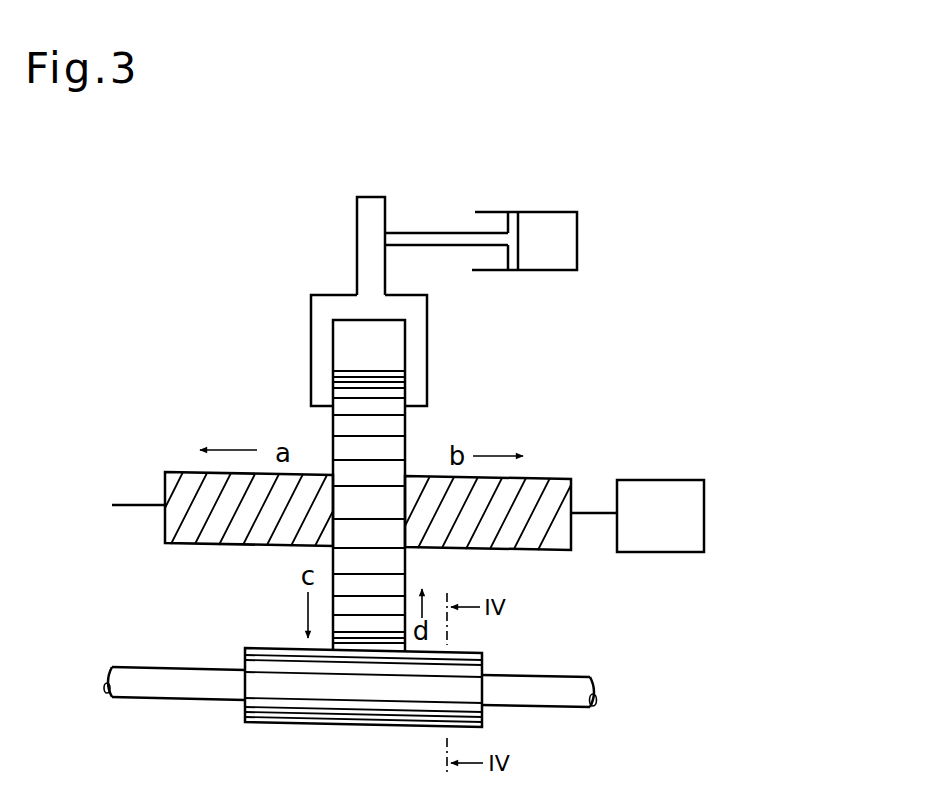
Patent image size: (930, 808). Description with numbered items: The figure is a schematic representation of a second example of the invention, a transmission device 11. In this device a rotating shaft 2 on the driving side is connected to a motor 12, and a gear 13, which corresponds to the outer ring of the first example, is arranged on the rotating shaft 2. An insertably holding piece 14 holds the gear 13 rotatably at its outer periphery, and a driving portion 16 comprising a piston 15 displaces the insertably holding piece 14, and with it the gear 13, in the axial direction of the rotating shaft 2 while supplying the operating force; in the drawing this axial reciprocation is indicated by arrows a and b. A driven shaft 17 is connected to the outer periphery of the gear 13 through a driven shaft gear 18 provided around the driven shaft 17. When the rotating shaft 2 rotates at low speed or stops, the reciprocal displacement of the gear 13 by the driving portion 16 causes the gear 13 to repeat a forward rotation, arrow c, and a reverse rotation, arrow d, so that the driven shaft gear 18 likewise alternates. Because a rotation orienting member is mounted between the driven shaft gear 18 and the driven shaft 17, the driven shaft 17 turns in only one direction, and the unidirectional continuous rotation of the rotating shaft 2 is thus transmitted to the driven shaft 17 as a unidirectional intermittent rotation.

The transmission device 11 is at (422, 192).
The rotating shaft 2 is at (560, 477).
The motor 12 is at (683, 480).
The gear 13 is at (405, 435).
The insertably holding piece 14 is at (420, 353).
The piston 15 is at (492, 222).
The driving portion 16 is at (356, 226).
The driven shaft 17 is at (543, 685).
The driven shaft gear 18 is at (268, 678).